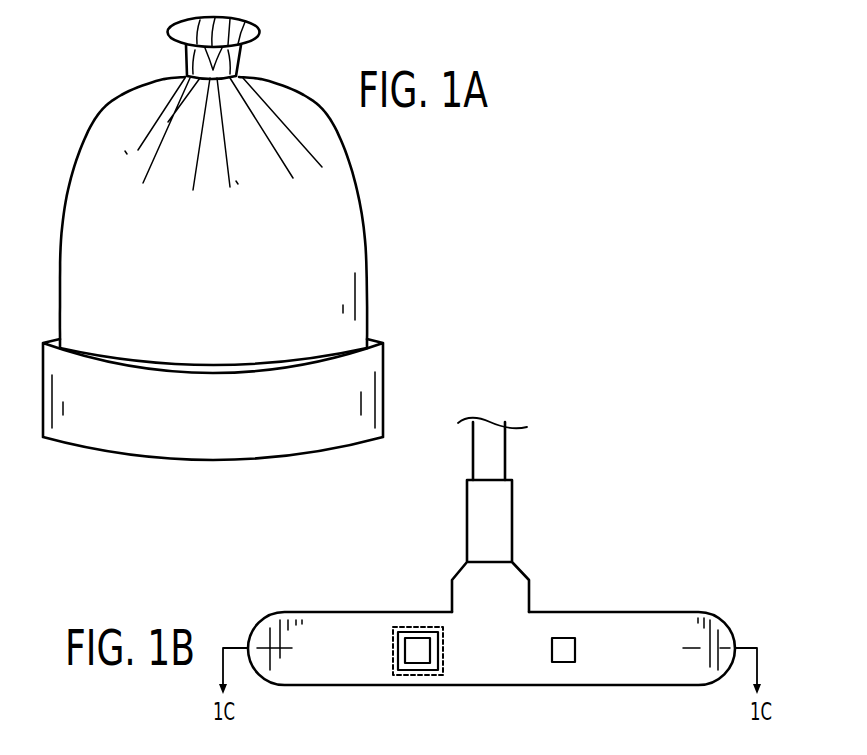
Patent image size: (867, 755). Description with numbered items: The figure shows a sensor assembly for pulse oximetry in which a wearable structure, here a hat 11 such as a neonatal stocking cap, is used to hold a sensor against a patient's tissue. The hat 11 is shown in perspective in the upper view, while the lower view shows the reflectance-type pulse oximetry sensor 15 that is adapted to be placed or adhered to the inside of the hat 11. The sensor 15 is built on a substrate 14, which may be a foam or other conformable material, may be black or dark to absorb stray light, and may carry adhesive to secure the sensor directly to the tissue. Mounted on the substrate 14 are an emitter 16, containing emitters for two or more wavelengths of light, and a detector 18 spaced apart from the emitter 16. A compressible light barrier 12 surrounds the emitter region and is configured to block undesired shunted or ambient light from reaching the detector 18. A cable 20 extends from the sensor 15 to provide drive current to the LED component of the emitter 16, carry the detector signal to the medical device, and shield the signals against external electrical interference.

In FIG. 1A, the hat 11 is at (360, 198).
In FIG. 1B, the compressible light barrier 12 is at (435, 677).
In FIG. 1B, the substrate 14 is at (603, 685).
In FIG. 1B, the reflectance-type pulse oximetry sensor 15 is at (413, 582).
In FIG. 1B, the emitter 16 is at (420, 653).
In FIG. 1B, the detector 18 is at (560, 652).
In FIG. 1B, the cable 20 is at (505, 452).